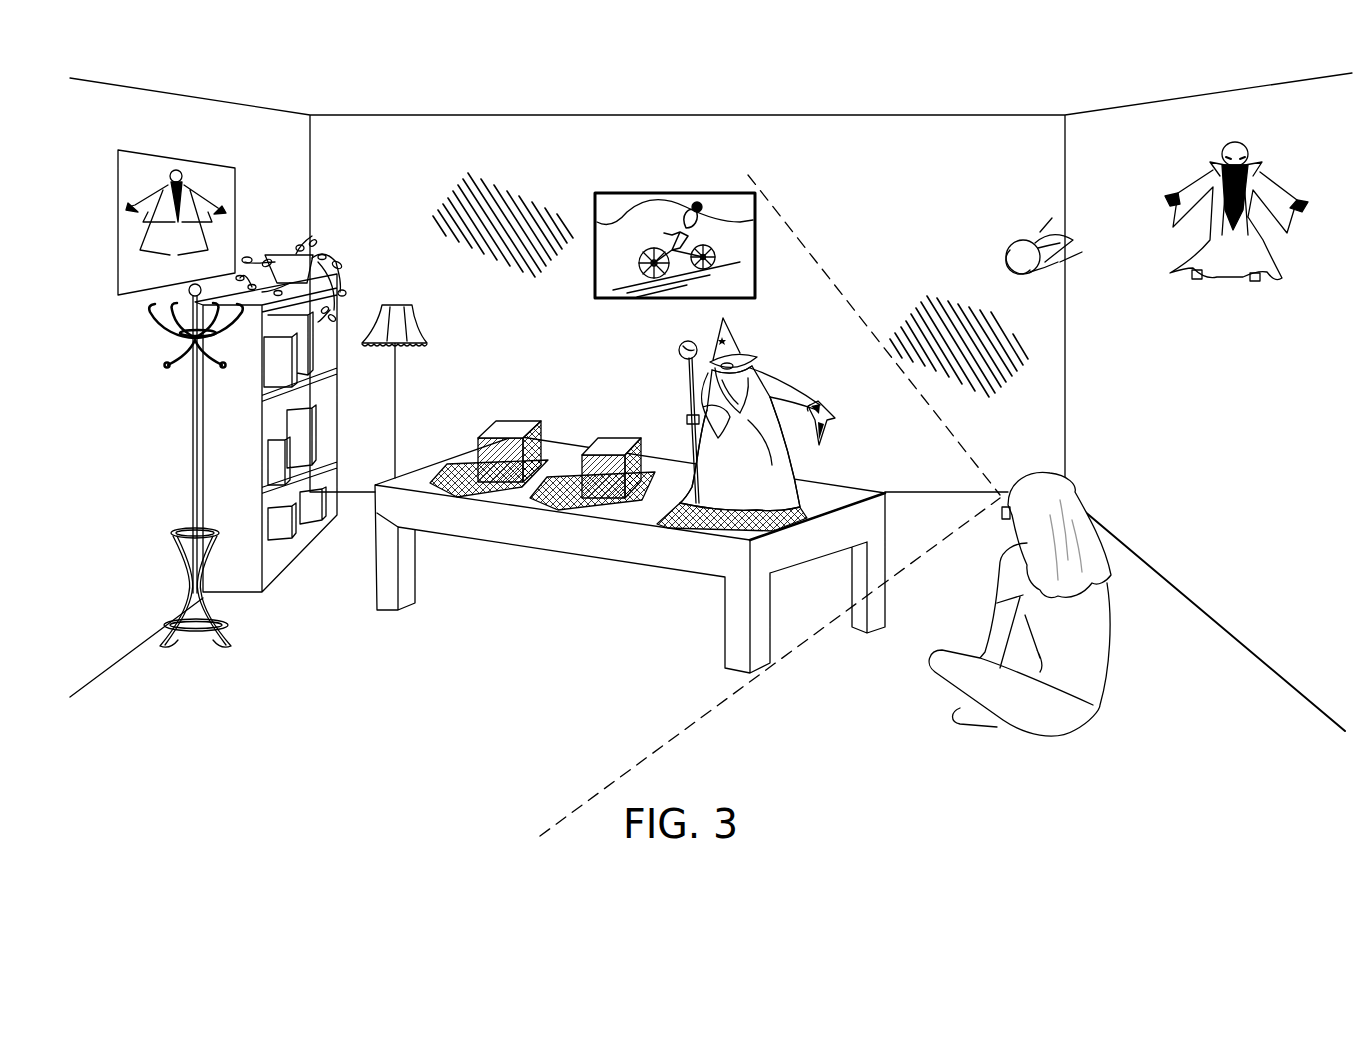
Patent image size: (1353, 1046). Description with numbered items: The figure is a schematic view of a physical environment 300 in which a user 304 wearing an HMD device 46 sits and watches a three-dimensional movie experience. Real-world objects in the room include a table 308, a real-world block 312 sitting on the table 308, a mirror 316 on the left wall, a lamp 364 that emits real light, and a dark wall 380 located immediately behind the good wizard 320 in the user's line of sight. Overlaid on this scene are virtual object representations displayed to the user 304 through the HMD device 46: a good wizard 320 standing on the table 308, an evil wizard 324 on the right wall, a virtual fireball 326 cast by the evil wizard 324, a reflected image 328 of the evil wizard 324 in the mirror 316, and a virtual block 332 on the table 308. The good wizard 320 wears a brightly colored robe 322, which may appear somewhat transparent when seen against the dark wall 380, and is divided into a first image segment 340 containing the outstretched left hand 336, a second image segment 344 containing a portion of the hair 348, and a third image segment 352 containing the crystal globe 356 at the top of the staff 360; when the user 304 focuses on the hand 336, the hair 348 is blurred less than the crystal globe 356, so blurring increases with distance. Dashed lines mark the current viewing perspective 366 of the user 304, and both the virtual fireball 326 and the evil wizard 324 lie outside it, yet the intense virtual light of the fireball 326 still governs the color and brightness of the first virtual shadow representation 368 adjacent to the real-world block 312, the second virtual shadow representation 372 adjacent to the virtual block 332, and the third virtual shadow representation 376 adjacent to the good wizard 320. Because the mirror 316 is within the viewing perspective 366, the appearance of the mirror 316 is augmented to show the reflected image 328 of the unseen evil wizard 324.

The physical environment 300 is at (827, 137).
The user 304 is at (1107, 658).
The table 308 is at (672, 466).
The real-world block 312 is at (497, 421).
The mirror 316 is at (236, 208).
The good wizard 320 is at (725, 492).
The robe 322 is at (760, 452).
The evil wizard 324 is at (1200, 188).
The virtual fireball 326 is at (1010, 246).
The reflected image 328 is at (178, 170).
The virtual block 332 is at (618, 438).
The outstretched left hand 336 is at (830, 420).
The first image segment 340 is at (832, 405).
The second image segment 344 is at (755, 345).
The hair 348 is at (755, 376).
The third image segment 352 is at (706, 348).
The crystal globe 356 is at (680, 351).
The staff 360 is at (690, 395).
The lamp 364 is at (398, 383).
The current viewing perspective 366 is at (818, 240).
The first virtual shadow representation 368 is at (455, 468).
The second virtual shadow representation 372 is at (570, 478).
The third virtual shadow representation 376 is at (660, 525).
The wall 380 is at (524, 313).
The HMD device 46 is at (1001, 507).